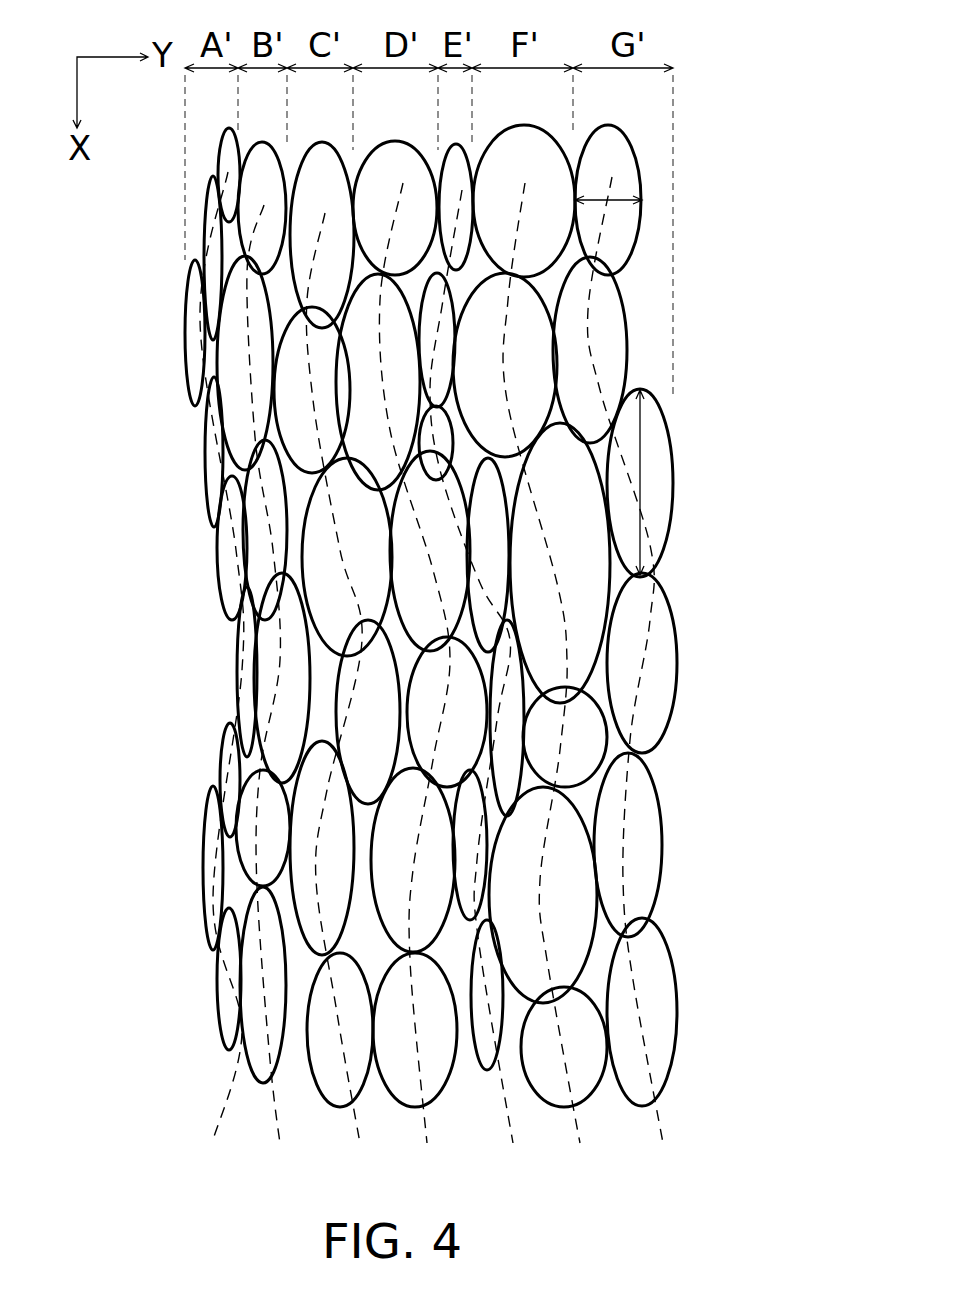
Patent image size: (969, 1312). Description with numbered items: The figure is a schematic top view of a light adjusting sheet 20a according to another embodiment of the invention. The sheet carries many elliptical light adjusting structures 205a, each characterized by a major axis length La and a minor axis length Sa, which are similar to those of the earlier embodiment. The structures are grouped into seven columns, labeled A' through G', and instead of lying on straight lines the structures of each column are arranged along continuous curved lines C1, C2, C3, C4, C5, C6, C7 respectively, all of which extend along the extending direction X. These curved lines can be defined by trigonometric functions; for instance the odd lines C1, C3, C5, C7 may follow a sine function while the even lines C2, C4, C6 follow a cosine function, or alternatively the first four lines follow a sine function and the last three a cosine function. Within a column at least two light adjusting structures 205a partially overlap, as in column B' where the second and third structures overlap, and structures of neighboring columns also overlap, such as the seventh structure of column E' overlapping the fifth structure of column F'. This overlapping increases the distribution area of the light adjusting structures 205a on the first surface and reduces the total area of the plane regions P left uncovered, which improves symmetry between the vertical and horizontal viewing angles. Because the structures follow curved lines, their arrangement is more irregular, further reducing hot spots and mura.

The light adjusting sheet 20a is at (780, 58).
The light adjusting structure 205a is at (228, 350).
The minor axis length Sa is at (612, 198).
The major axis length La is at (640, 525).
The plane region P is at (598, 694).
The continuous curved line C1 is at (216, 676).
The continuous curved line C2 is at (272, 693).
The continuous curved line C3 is at (342, 697).
The continuous curved line C4 is at (414, 682).
The continuous curved line C5 is at (480, 685).
The continuous curved line C6 is at (550, 682).
The continuous curved line C7 is at (636, 679).